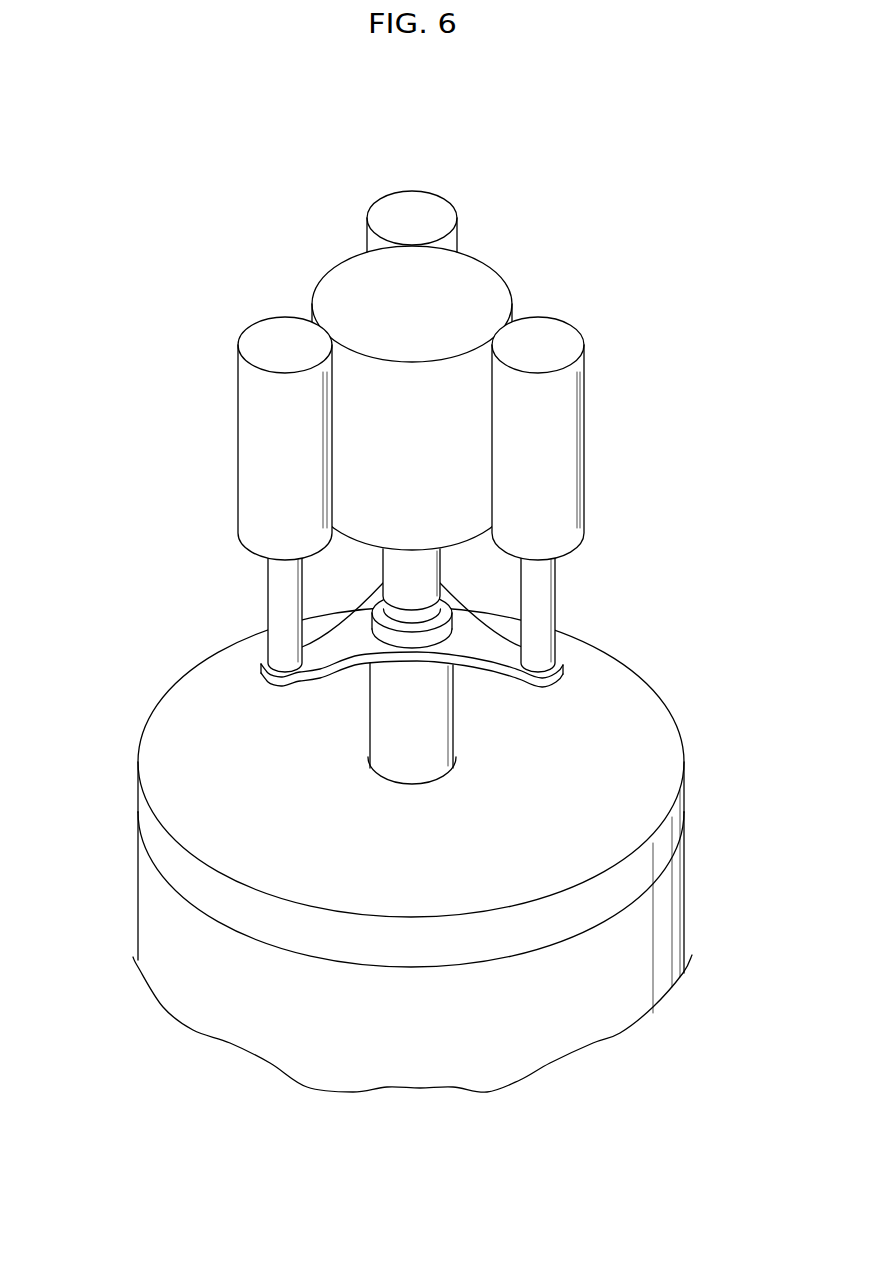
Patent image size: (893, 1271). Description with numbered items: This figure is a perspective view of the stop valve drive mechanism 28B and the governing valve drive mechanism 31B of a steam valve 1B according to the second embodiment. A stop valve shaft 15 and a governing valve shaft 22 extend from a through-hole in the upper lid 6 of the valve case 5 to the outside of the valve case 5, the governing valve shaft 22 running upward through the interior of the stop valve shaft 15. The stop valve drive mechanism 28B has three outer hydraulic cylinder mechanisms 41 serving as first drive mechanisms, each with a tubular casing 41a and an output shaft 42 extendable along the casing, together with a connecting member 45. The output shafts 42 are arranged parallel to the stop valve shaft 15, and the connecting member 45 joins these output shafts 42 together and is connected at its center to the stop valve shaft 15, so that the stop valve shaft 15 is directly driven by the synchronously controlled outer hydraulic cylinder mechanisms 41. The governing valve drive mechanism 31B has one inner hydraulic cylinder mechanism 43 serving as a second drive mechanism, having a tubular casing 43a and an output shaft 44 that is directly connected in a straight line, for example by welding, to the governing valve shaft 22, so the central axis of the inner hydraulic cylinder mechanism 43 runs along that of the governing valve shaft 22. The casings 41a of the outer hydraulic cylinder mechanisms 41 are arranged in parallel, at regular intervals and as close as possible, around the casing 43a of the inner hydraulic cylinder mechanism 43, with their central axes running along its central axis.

The steam valve 1B is at (208, 185).
The valve case 5 is at (660, 917).
The upper lid 6 is at (650, 737).
The stop valve shaft 15 is at (390, 721).
The governing valve shaft 22 is at (420, 613).
The stop valve drive mechanism 28B is at (598, 379).
The governing valve drive mechanism 31B is at (495, 257).
The outer hydraulic cylinder mechanism 41 is at (412, 352).
The tubular casing 41a is at (418, 199).
The output shaft 42 is at (282, 584).
The inner hydraulic cylinder mechanism 43 is at (479, 396).
The tubular casing 43a is at (488, 288).
The output shaft 44 is at (420, 577).
The connecting member 45 is at (338, 647).